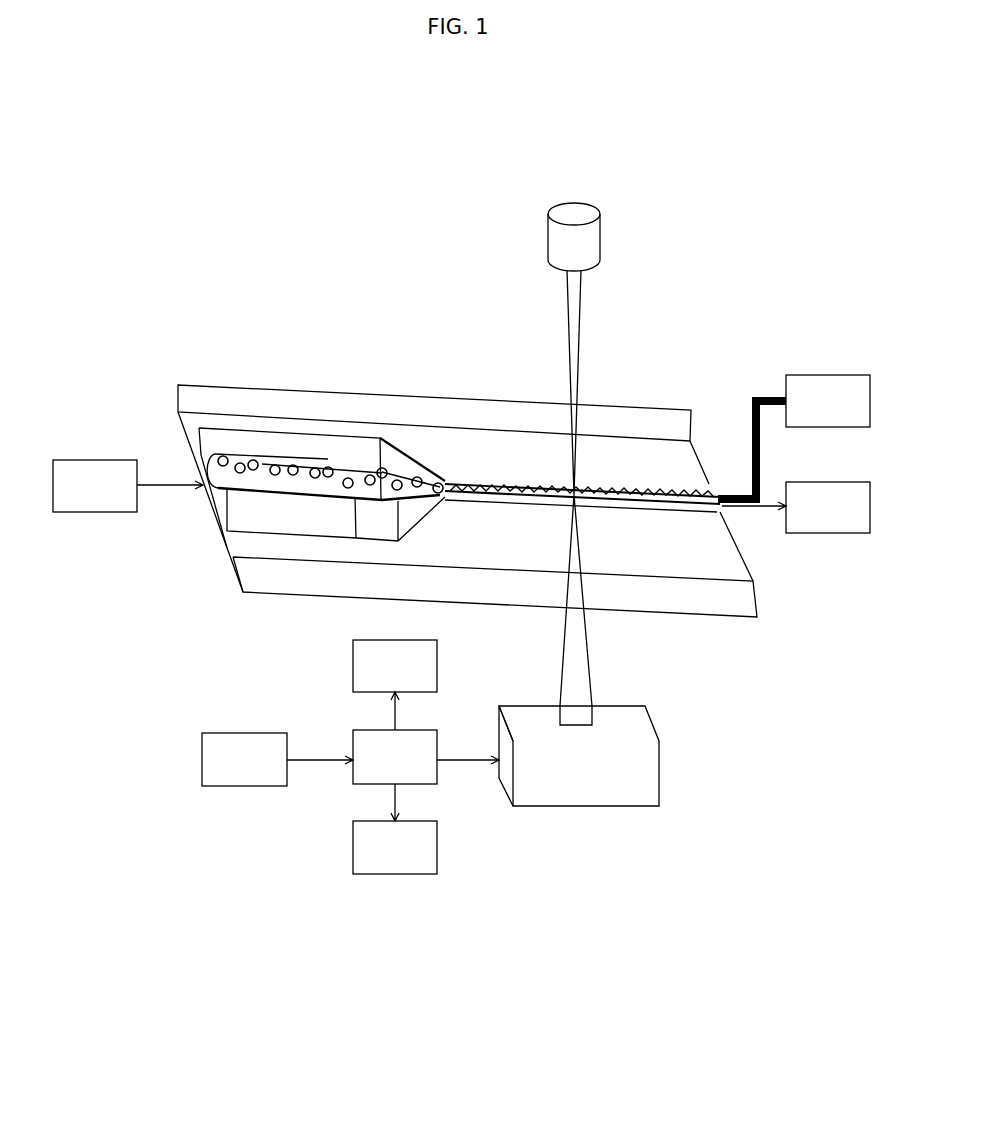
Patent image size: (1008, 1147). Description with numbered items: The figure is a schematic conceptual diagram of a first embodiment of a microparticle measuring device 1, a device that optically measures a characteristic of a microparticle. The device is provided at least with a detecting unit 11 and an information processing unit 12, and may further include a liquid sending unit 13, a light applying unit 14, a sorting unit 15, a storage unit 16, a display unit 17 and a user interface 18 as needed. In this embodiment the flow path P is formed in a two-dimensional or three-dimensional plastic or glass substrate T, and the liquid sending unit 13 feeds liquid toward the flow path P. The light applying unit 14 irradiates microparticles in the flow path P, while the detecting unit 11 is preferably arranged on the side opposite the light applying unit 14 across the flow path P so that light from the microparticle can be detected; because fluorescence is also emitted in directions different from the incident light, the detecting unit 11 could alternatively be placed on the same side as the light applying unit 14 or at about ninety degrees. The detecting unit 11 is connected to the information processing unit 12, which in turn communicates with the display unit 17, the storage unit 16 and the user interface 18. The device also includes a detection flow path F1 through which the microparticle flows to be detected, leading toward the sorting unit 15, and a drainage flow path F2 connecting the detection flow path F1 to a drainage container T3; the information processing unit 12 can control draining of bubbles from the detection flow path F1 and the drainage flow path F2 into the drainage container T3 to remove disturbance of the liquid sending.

The microparticle measuring device 1 is at (860, 204).
The detecting unit 11 is at (648, 775).
The information processing unit 12 is at (426, 757).
The liquid sending unit 13 is at (128, 486).
The light applying unit 14 is at (577, 209).
The sorting unit 15 is at (796, 507).
The storage unit 16 is at (395, 829).
The display unit 17 is at (395, 685).
The user interface 18 is at (277, 759).
The substrate T is at (468, 445).
The drainage container T3 is at (828, 401).
The detection flow path F1 is at (627, 488).
The drainage flow path F2 is at (771, 394).
The flow path P is at (355, 500).